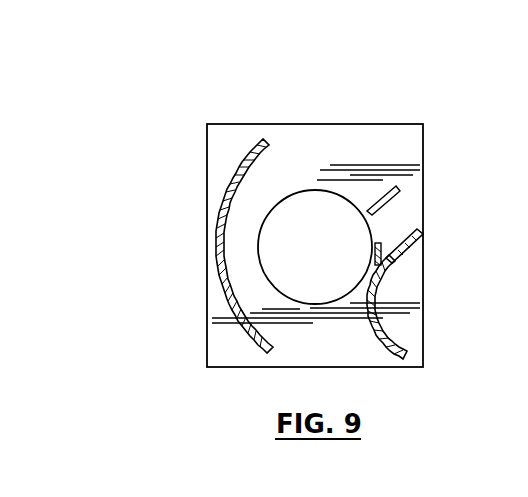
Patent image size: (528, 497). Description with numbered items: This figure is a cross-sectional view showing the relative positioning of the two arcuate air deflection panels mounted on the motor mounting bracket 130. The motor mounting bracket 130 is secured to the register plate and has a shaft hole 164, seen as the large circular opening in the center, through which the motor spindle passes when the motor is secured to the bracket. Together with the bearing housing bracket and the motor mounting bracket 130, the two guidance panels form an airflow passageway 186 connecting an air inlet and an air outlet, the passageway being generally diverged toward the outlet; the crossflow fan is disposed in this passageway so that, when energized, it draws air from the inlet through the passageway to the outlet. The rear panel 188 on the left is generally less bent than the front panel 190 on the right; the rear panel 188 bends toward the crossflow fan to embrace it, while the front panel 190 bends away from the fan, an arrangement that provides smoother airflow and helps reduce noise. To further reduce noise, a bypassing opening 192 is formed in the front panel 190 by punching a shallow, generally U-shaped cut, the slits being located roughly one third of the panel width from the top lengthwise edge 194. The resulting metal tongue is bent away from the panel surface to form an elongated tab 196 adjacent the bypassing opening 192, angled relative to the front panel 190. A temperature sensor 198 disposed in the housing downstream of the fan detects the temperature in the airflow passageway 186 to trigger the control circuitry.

The motor mounting bracket 130 is at (221, 339).
The shaft hole 164 is at (298, 268).
The airflow passageway 186 is at (282, 174).
The rear panel 188 is at (234, 178).
The front panel 190 is at (395, 322).
The bypassing opening 192 is at (395, 270).
The top lengthwise edge 194 is at (426, 224).
The elongated tab 196 is at (378, 243).
The temperature sensor 198 is at (373, 196).